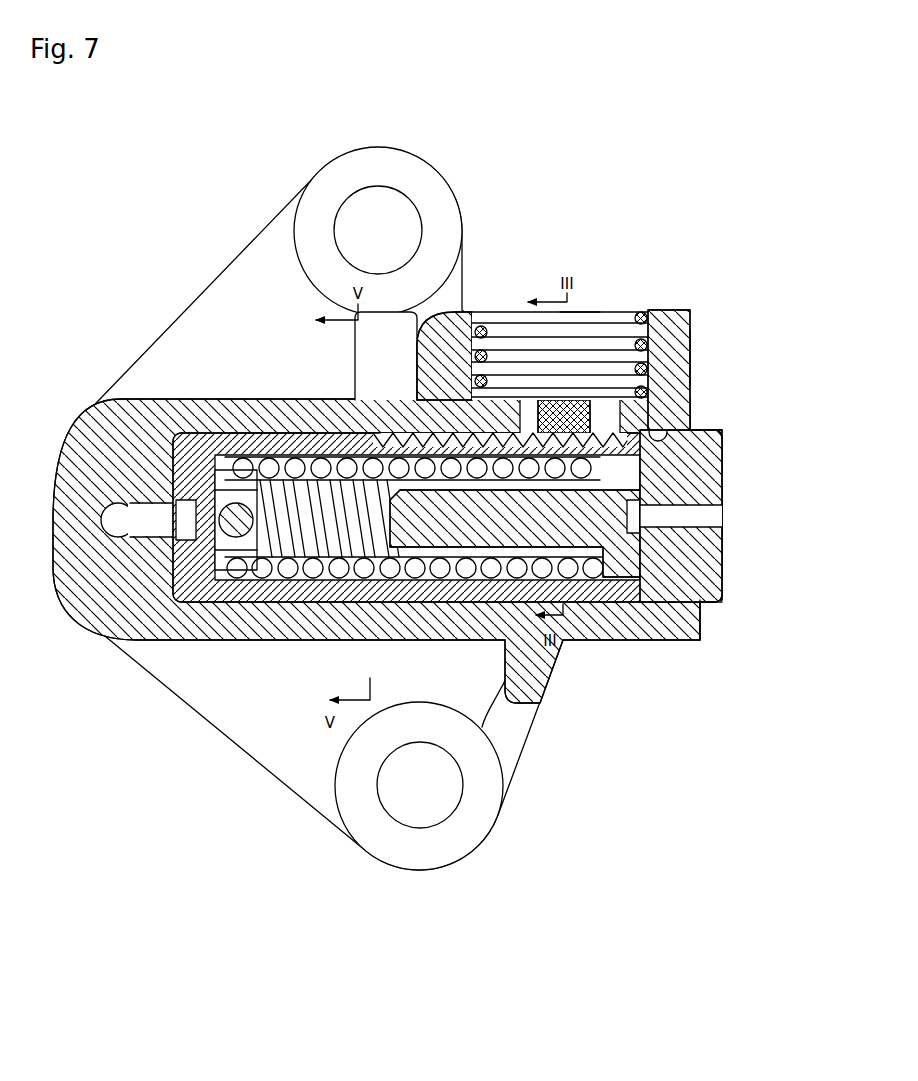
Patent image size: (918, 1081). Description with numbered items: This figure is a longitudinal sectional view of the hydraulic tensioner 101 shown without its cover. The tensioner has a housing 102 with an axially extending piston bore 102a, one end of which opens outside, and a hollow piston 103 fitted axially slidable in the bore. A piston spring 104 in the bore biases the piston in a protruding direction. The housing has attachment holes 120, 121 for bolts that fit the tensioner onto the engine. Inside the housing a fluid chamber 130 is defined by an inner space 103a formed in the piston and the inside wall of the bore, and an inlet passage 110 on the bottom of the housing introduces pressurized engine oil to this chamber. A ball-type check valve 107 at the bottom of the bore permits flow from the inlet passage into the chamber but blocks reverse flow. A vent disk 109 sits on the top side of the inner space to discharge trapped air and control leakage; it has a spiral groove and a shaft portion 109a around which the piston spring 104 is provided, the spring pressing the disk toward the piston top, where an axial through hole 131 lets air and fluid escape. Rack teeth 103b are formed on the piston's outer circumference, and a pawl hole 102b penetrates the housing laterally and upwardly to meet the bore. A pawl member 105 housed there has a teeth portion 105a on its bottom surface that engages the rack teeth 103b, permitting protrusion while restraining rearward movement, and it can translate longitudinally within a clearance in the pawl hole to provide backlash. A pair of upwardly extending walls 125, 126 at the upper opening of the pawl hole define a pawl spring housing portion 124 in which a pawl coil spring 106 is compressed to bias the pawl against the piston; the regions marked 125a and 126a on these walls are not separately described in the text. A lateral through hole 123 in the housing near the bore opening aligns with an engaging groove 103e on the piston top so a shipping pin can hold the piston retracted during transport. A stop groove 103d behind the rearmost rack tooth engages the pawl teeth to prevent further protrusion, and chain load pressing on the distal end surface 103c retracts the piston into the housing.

The hydraulic tensioner 101 is at (170, 252).
The housing 102 is at (76, 402).
The piston bore 102a is at (704, 626).
The pawl hole 102b is at (689, 403).
The hollow piston 103 is at (308, 602).
The inner space 103a is at (280, 425).
The rack teeth 103b is at (404, 396).
The distal end surface 103c is at (721, 594).
The stop groove 103d is at (360, 430).
The engaging groove 103e is at (672, 461).
The piston spring 104 is at (395, 555).
The pawl member 105 is at (500, 420).
The teeth portion 105a is at (688, 353).
The pawl coil spring 106 is at (595, 301).
The check valve 107 is at (215, 602).
The vent disk 109 is at (630, 606).
The shaft portion 109a is at (451, 596).
The inlet passage 110 is at (117, 528).
The attachment hole 120 is at (381, 188).
The attachment hole 121 is at (427, 828).
The through hole 123 is at (670, 432).
The pawl spring housing portion 124 is at (620, 300).
The wall 125 is at (696, 314).
The spring seat end 125a is at (643, 308).
The wall 126 is at (470, 312).
The spring retainer end 126a is at (488, 325).
The fluid chamber 130 is at (262, 584).
The through hole 131 is at (722, 520).